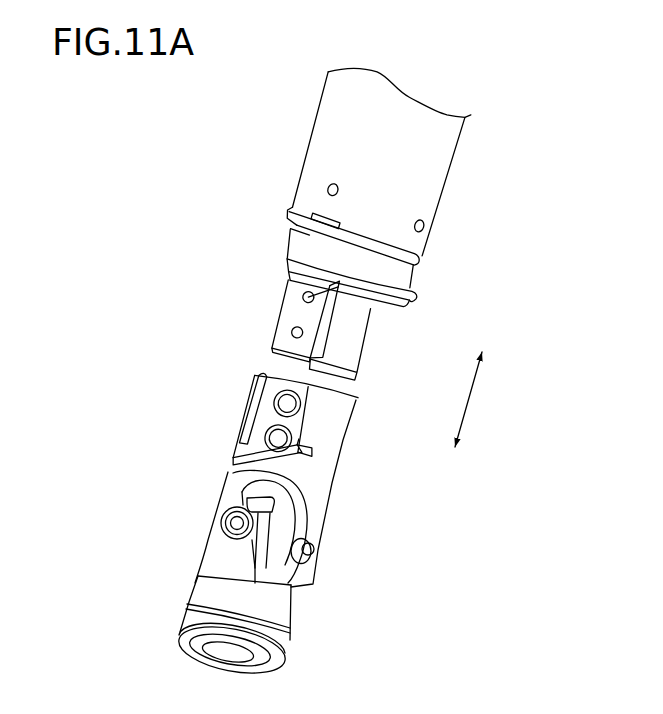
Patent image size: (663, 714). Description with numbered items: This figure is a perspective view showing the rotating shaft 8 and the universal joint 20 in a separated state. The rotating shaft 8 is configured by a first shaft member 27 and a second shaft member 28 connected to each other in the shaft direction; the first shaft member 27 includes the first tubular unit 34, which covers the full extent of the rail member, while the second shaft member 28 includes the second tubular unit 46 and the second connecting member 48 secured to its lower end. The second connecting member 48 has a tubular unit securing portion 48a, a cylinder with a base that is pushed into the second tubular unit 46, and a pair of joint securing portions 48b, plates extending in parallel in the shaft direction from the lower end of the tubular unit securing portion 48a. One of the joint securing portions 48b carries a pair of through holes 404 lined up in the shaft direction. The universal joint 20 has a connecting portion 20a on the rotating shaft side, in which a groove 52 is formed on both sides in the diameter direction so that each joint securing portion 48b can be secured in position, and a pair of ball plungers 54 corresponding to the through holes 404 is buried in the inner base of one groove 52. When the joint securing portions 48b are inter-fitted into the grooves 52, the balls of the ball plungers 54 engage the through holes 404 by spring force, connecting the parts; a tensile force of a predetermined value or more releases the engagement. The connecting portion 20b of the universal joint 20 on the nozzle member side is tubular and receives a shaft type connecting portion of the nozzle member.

The first tubular unit 34 is at (335, 122).
The second tubular unit 46 is at (289, 227).
The first shaft member 27 is at (455, 195).
The second shaft member 28 is at (407, 285).
The rotating shaft 8 is at (395, 245).
The second connecting member 48 is at (238, 305).
The tubular unit securing portion 48a is at (310, 249).
The joint securing portions 48b is at (297, 332).
The through holes 404 is at (357, 323).
The groove 52 is at (285, 403).
The ball plungers 54 is at (277, 438).
The universal joint 20 is at (296, 524).
The connecting portion 20a is at (296, 477).
The connecting portion 20b is at (282, 621).